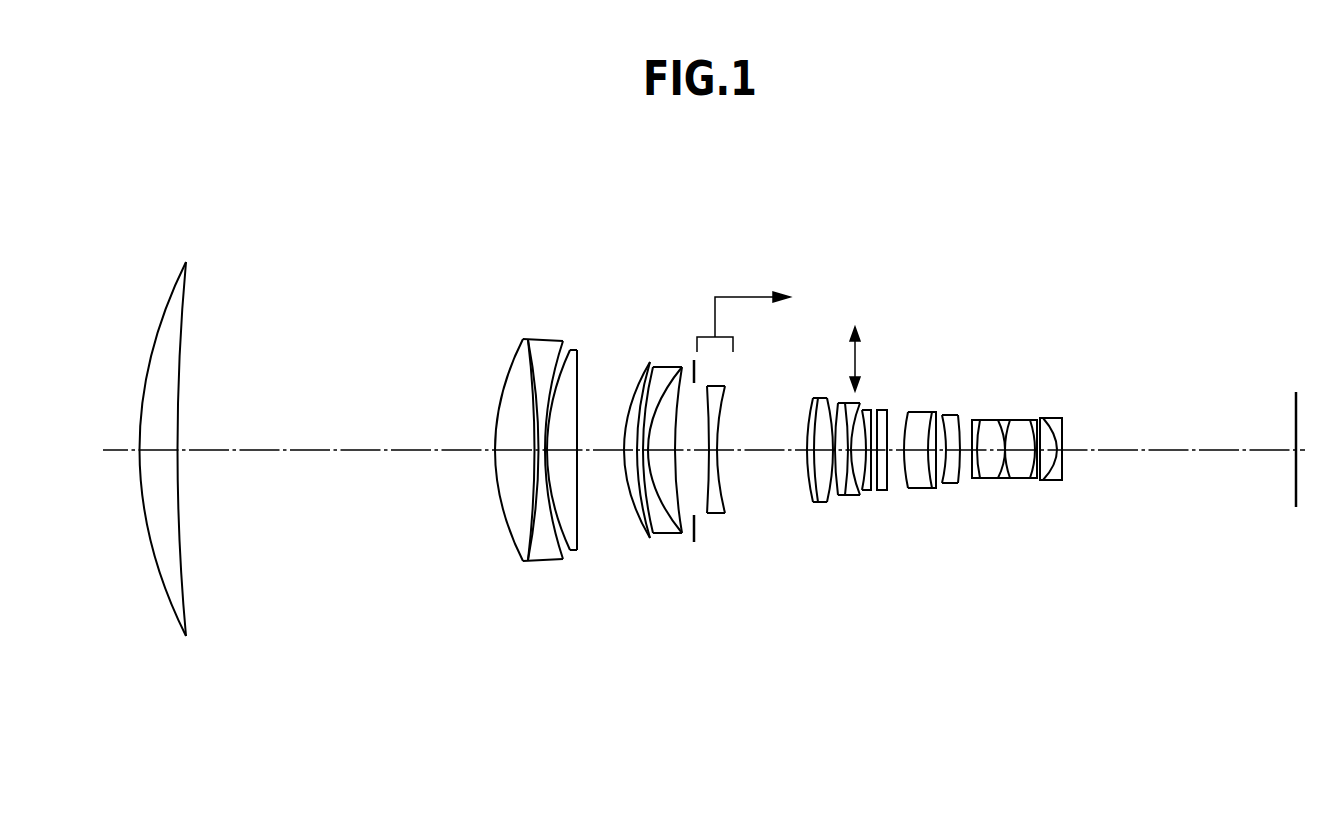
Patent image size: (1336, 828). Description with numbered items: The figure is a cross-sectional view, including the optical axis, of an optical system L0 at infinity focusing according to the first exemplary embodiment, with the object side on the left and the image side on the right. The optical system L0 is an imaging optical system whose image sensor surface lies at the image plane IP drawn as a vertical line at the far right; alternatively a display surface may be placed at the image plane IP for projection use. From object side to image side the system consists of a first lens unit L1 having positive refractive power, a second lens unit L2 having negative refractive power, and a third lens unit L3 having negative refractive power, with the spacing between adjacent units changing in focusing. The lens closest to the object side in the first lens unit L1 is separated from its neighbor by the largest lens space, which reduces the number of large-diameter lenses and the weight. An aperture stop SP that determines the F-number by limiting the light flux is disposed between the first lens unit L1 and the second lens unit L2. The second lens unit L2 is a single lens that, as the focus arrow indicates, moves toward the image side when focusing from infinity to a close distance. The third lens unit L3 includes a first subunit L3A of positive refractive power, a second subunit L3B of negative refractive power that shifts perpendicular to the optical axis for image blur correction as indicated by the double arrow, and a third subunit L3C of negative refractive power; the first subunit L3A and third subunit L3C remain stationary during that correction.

The optical system L0 is at (1094, 218).
The first lens unit L1 is at (702, 618).
The second lens unit L2 is at (740, 618).
The third lens unit L3 is at (1066, 620).
The first subunit L3A is at (833, 507).
The second subunit L3B is at (875, 507).
The third subunit L3C is at (1066, 507).
The aperture stop SP is at (692, 366).
The image plane IP is at (1294, 415).